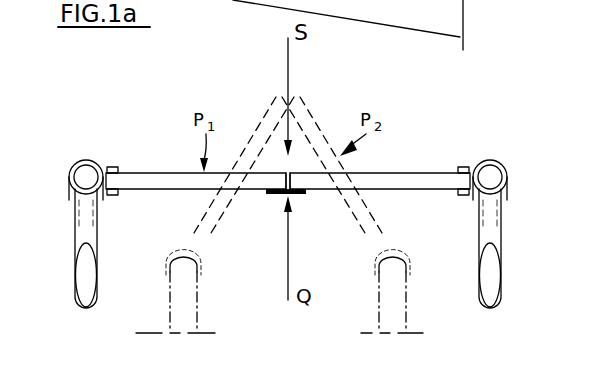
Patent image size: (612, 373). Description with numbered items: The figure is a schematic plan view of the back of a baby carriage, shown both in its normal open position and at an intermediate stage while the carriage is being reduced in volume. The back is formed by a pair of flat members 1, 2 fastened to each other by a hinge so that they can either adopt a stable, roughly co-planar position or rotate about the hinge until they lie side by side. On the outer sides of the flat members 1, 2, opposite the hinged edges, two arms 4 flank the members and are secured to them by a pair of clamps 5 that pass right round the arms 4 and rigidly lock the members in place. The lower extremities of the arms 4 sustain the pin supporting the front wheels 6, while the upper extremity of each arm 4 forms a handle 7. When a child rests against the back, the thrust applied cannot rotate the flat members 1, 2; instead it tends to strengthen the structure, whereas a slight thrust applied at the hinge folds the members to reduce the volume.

The flat member 1 is at (400, 172).
The flat member 2 is at (168, 172).
The arm 4 is at (74, 220).
The clamp 5 is at (84, 160).
The front wheel 6 is at (348, 25).
The handle 7 is at (80, 306).